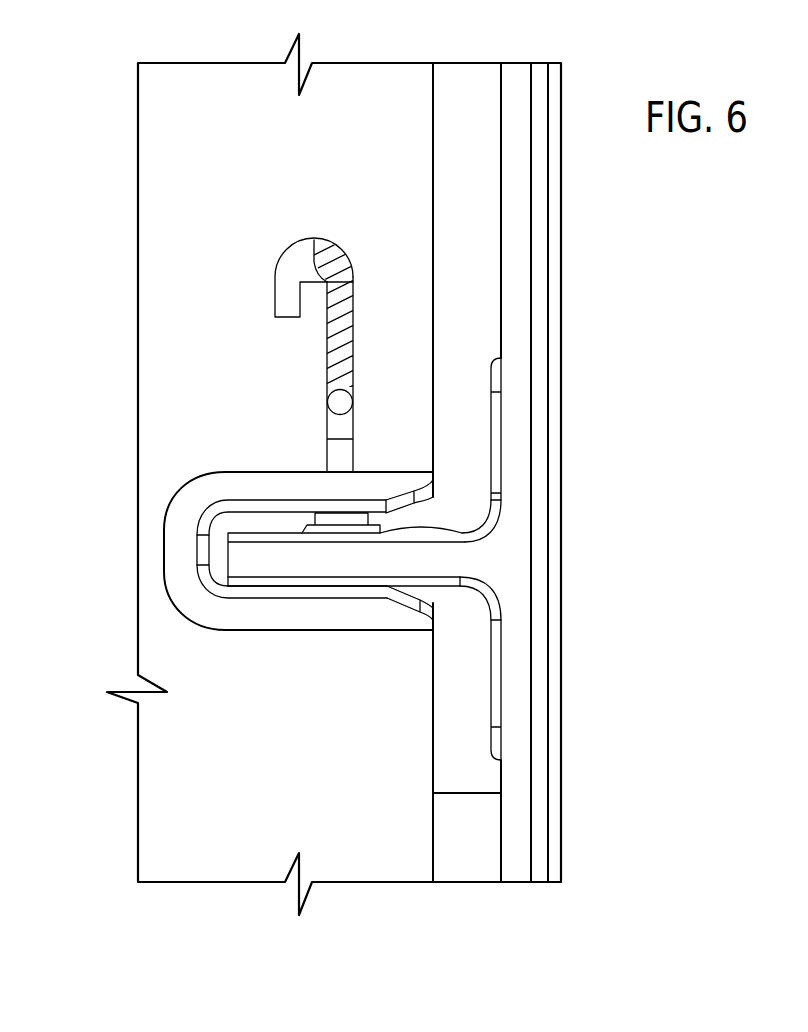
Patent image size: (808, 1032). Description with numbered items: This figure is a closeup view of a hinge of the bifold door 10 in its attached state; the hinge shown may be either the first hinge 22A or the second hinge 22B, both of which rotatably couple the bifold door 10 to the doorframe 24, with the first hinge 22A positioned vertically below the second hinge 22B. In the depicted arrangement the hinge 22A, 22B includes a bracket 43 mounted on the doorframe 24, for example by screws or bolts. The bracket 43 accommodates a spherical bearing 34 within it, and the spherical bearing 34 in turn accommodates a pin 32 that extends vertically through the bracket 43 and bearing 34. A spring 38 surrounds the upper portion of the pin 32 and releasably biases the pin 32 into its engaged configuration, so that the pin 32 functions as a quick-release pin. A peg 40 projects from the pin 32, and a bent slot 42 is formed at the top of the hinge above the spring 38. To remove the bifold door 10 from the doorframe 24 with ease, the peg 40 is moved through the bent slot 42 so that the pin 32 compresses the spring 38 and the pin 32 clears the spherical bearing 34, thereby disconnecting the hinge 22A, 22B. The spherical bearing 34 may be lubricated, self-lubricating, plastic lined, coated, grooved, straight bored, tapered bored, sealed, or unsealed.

The bifold door 10 is at (103, 118).
The doorframe 24 is at (561, 337).
The first hinge 22A is at (594, 571).
The second hinge 22B is at (548, 472).
The bracket 43 is at (522, 480).
The spherical bearing 34 is at (460, 540).
The pin 32 is at (338, 372).
The spring 38 is at (345, 283).
The peg 40 is at (353, 402).
The bent slot 42 is at (285, 305).